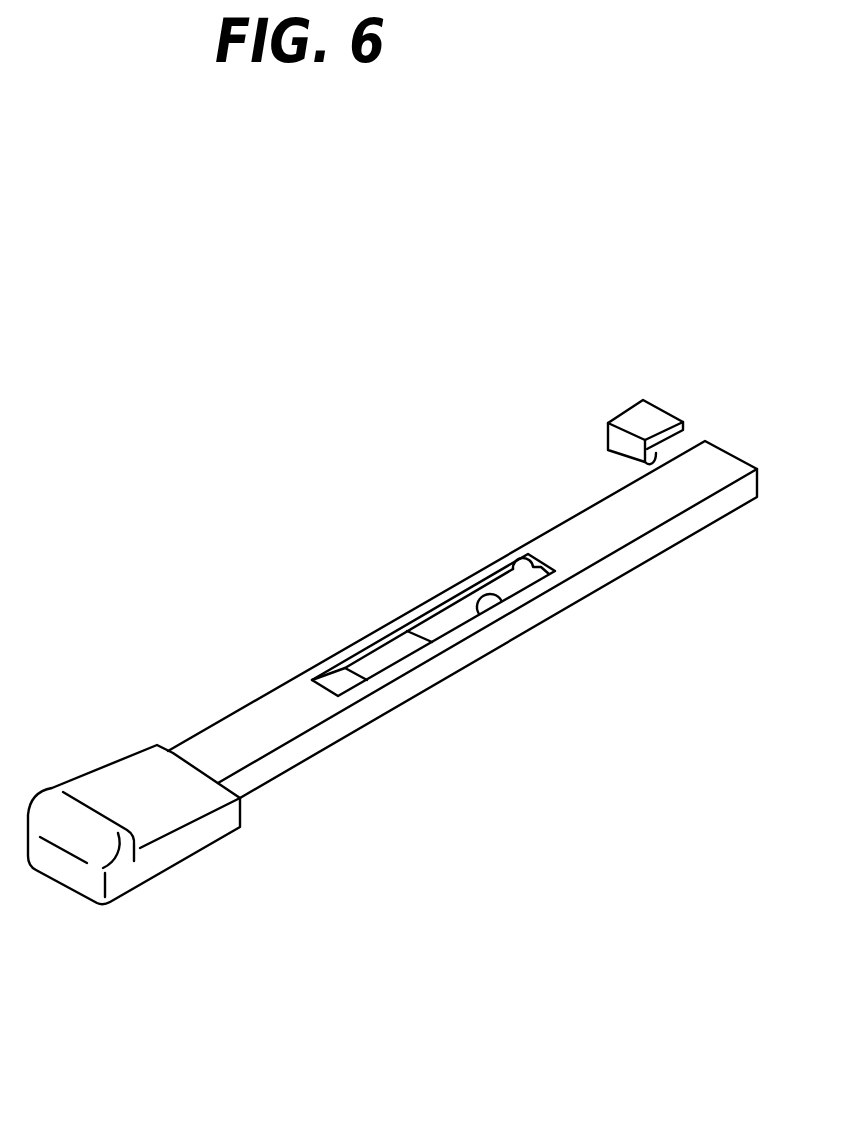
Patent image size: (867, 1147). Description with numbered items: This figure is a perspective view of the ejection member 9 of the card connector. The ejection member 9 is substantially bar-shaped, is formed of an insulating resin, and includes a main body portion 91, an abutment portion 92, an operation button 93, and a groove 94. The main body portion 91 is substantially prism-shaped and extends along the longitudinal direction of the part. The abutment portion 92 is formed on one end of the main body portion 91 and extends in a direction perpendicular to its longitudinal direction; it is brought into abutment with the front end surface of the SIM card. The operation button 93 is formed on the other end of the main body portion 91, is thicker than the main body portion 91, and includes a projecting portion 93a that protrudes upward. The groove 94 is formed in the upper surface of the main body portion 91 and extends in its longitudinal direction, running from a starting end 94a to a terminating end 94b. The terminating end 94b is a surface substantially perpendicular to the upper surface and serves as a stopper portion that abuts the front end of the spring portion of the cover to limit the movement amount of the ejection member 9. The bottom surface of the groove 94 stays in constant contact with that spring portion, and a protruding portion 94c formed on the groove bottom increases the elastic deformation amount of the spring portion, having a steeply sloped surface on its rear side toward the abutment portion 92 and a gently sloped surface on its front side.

The ejection member 9 is at (275, 687).
The main body portion 91 is at (438, 672).
The abutment portion 92 is at (630, 413).
The operation button 93 is at (188, 848).
The projecting portion 93a is at (80, 817).
The groove 94 is at (505, 598).
The starting end 94a is at (332, 688).
The terminating end 94b is at (503, 557).
The protruding portion 94c is at (401, 633).